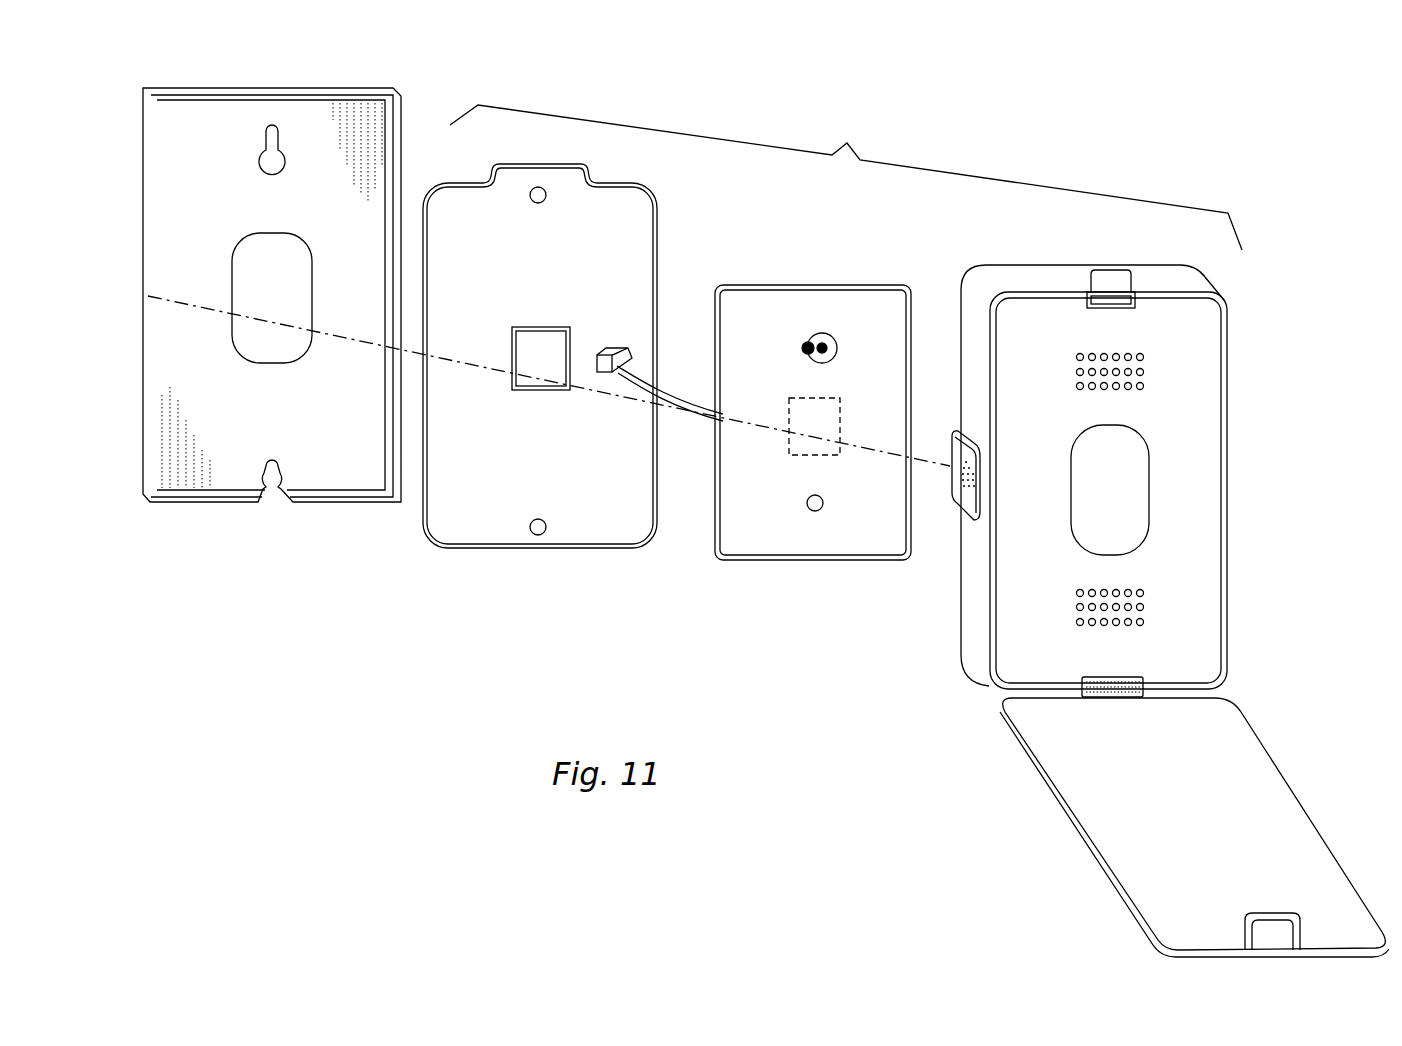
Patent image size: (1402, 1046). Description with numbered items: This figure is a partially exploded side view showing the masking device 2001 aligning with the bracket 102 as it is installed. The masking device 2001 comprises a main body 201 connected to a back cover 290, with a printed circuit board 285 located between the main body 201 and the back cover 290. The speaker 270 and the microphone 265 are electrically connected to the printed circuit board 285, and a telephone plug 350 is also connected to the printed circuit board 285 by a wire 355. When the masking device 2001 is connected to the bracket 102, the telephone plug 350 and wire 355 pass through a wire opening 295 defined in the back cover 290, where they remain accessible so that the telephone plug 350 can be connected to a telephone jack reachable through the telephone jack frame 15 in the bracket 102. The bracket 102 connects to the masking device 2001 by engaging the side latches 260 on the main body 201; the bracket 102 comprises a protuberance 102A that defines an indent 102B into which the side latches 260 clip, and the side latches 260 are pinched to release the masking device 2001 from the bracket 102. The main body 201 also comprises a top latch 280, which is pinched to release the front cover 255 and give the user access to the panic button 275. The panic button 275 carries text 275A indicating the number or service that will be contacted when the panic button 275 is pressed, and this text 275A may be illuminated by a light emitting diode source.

The bracket 102 is at (264, 306).
The protuberance 102A is at (143, 368).
The indent 102B is at (385, 457).
The telephone jack frame 15 is at (290, 365).
The masking device 2001 is at (846, 177).
The back cover 290 is at (574, 356).
The wire opening 295 is at (548, 325).
The wire 355 is at (683, 402).
The telephone plug 350 is at (600, 372).
The printed circuit board 285 is at (808, 437).
The speaker 270 is at (837, 332).
The microphone 265 is at (817, 511).
The side latches 260 is at (965, 519).
The main body 201 is at (1139, 455).
The top latch 280 is at (1092, 270).
The panic button 275 is at (1188, 484).
The text 275A is at (1135, 492).
The front cover 255 is at (1037, 782).